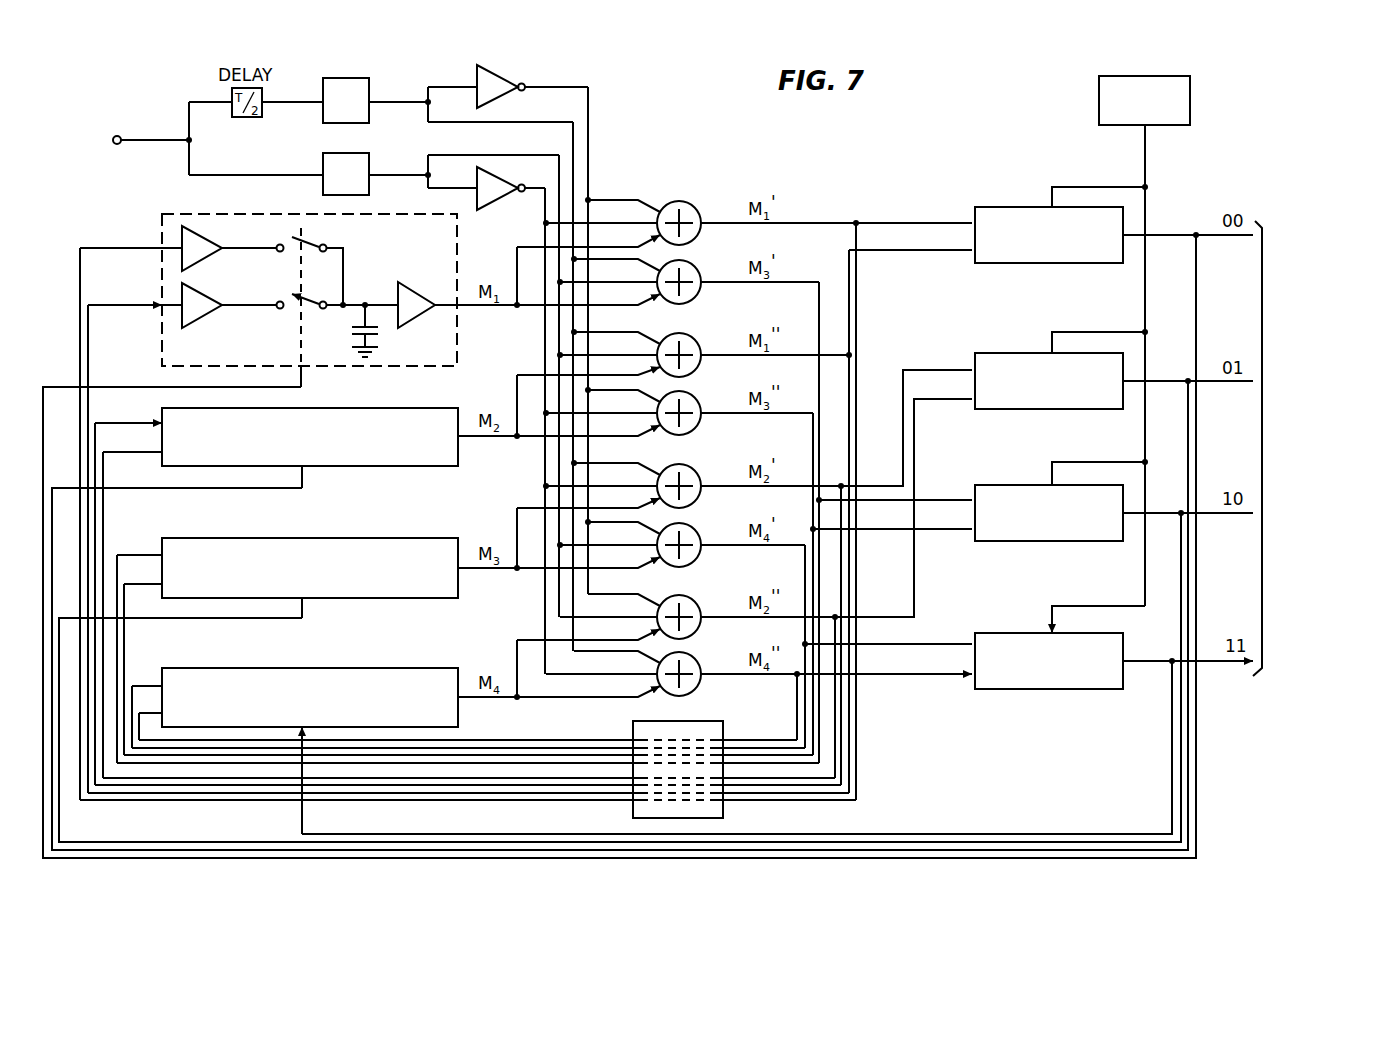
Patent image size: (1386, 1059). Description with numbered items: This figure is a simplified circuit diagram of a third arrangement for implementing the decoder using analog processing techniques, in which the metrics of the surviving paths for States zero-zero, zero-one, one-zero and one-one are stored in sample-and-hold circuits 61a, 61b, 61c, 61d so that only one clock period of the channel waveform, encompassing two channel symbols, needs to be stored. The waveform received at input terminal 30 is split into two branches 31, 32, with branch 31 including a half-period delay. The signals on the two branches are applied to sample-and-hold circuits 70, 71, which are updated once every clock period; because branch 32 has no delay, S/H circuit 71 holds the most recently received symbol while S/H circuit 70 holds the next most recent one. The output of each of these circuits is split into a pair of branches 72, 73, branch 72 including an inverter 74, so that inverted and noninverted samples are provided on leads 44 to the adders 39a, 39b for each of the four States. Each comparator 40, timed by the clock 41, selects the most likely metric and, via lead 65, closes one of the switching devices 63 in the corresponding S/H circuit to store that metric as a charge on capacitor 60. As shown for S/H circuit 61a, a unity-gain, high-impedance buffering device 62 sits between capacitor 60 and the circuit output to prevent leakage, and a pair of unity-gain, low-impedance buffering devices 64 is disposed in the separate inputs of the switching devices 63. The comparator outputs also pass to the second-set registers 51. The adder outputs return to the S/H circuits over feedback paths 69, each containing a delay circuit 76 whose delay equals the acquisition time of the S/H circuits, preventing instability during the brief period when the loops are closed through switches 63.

The input terminal 30 is at (118, 134).
The branch 31 is at (190, 96).
The branch 32 is at (206, 172).
The sample-and-hold circuit 70 is at (367, 84).
The sample-and-hold circuit 71 is at (367, 157).
The branch 72 is at (436, 86).
The branch 73 is at (438, 122).
The inverter 74 is at (504, 78).
The leads 44 is at (548, 172).
The sample-and-hold circuit 61a is at (200, 214).
The sample-and-hold circuit 61b is at (198, 408).
The sample-and-hold circuit 61c is at (201, 538).
The sample-and-hold circuit 61d is at (201, 668).
The unity-gain, low-impedance buffering devices 64 is at (216, 302).
The analog signal switching devices 63 is at (294, 296).
The unity-gain, high-impedance buffering device 62 is at (424, 294).
The capacitor 60 is at (352, 332).
The adder 39a is at (690, 203).
The adder 39b is at (690, 262).
The comparator 40 is at (1022, 204).
The clock 41 is at (1189, 82).
The delay circuit 76 is at (726, 724).
The feedback paths 69 is at (856, 700).
The lead 65 is at (1172, 740).
The set 2 registers 51 is at (1309, 448).